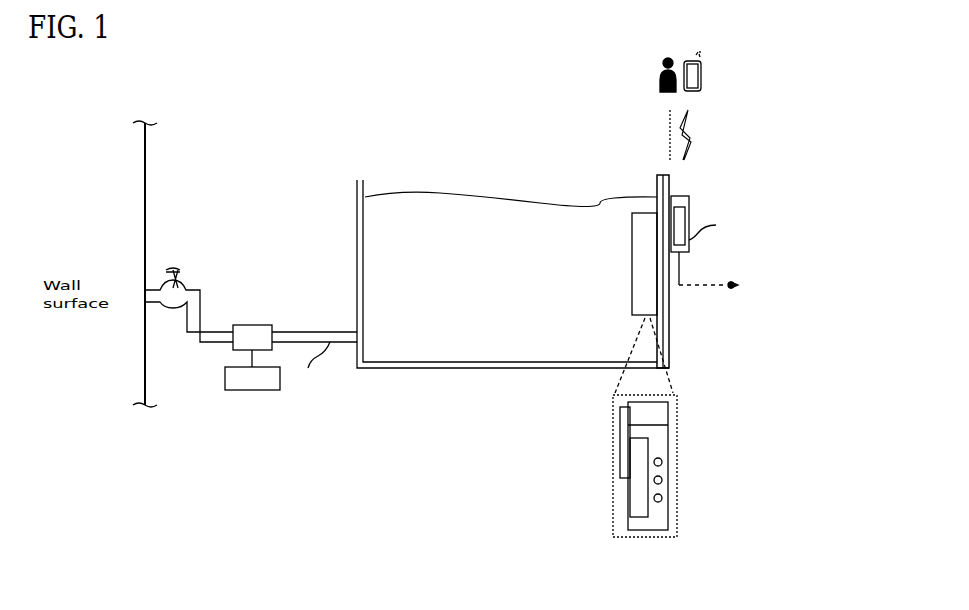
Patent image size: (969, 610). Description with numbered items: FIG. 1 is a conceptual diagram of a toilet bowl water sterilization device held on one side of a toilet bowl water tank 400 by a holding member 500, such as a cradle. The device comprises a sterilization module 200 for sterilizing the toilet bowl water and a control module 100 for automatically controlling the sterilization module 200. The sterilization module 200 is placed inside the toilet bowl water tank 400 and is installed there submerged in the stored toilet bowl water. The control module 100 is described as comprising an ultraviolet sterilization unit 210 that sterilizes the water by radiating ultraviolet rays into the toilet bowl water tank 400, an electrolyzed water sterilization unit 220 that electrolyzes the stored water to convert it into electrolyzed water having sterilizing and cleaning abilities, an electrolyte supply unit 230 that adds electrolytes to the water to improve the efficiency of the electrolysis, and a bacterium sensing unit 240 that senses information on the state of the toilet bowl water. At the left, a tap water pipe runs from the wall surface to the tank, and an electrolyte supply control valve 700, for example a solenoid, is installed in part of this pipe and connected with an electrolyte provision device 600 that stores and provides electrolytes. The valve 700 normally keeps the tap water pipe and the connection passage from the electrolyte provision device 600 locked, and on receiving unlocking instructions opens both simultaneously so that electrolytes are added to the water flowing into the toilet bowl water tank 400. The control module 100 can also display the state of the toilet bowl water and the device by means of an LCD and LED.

The control module 100 is at (690, 198).
The sterilization module 200 is at (662, 318).
The ultraviolet sterilization unit 210 is at (622, 423).
The electrolyzed water sterilization unit 220 is at (630, 493).
The electrolyte supply unit 230 is at (662, 503).
The bacterium sensing unit 240 is at (668, 425).
The toilet bowl water tank 400 is at (447, 369).
The holding member 500 is at (656, 177).
The electrolyte provision device 600 is at (253, 390).
The electrolyte supply control valve 700 is at (254, 325).